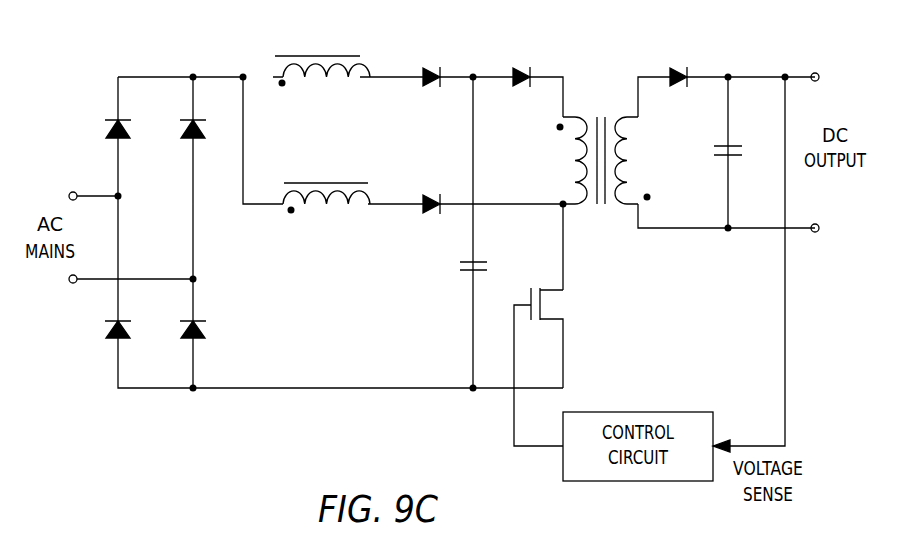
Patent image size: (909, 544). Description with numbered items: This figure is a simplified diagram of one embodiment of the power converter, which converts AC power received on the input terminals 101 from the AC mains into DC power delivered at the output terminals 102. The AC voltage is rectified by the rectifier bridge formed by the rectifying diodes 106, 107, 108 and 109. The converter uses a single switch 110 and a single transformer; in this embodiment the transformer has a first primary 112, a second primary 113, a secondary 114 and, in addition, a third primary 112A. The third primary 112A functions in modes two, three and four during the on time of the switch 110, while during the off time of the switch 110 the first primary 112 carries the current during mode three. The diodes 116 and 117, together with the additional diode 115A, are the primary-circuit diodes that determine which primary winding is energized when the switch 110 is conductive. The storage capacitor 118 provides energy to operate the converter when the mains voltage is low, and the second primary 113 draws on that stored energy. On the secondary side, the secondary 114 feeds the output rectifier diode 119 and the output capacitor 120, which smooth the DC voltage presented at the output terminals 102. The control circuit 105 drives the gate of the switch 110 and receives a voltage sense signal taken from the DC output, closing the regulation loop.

The input terminals 101 is at (70, 193).
The output terminals 102 is at (819, 72).
The control circuit 105 is at (688, 483).
The rectifier bridge diode 106 is at (108, 130).
The rectifier bridge diode 107 is at (191, 137).
The rectifier bridge diode 108 is at (113, 345).
The rectifier bridge diode 109 is at (205, 328).
The power field effect transistor 110 is at (550, 298).
The first primary winding 112 is at (273, 67).
The third primary 112A is at (353, 212).
The second primary winding 113 is at (580, 115).
The secondary winding 114 is at (621, 212).
The diode 115A is at (428, 195).
The diode 116 is at (519, 66).
The diode 117 is at (427, 66).
The storage capacitor 118 is at (486, 262).
The output diode 119 is at (676, 65).
The output capacitor 120 is at (722, 144).